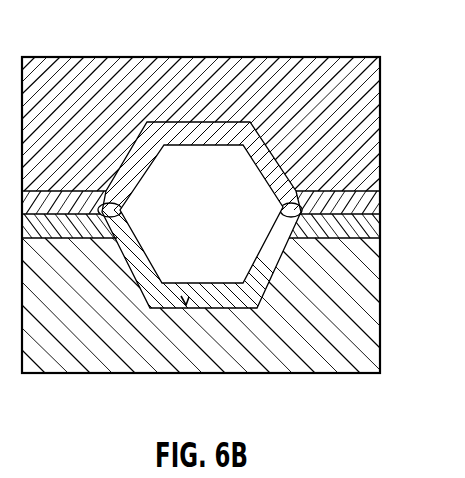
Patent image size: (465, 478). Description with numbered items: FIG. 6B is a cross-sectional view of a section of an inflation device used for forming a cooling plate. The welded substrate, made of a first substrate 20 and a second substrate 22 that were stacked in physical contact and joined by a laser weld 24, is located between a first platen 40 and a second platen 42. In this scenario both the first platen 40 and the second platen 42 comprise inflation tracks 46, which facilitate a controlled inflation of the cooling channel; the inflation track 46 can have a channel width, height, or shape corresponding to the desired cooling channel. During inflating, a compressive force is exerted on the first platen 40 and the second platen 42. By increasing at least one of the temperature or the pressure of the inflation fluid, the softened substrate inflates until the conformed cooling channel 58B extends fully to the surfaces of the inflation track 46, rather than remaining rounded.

The first substrate 20 is at (378, 226).
The second substrate 22 is at (376, 202).
The laser weld 24 is at (380, 60).
The first platen 40 is at (368, 317).
The second platen 42 is at (367, 130).
The inflation track 46 is at (178, 168).
The conformed cooling channel 58B is at (185, 303).